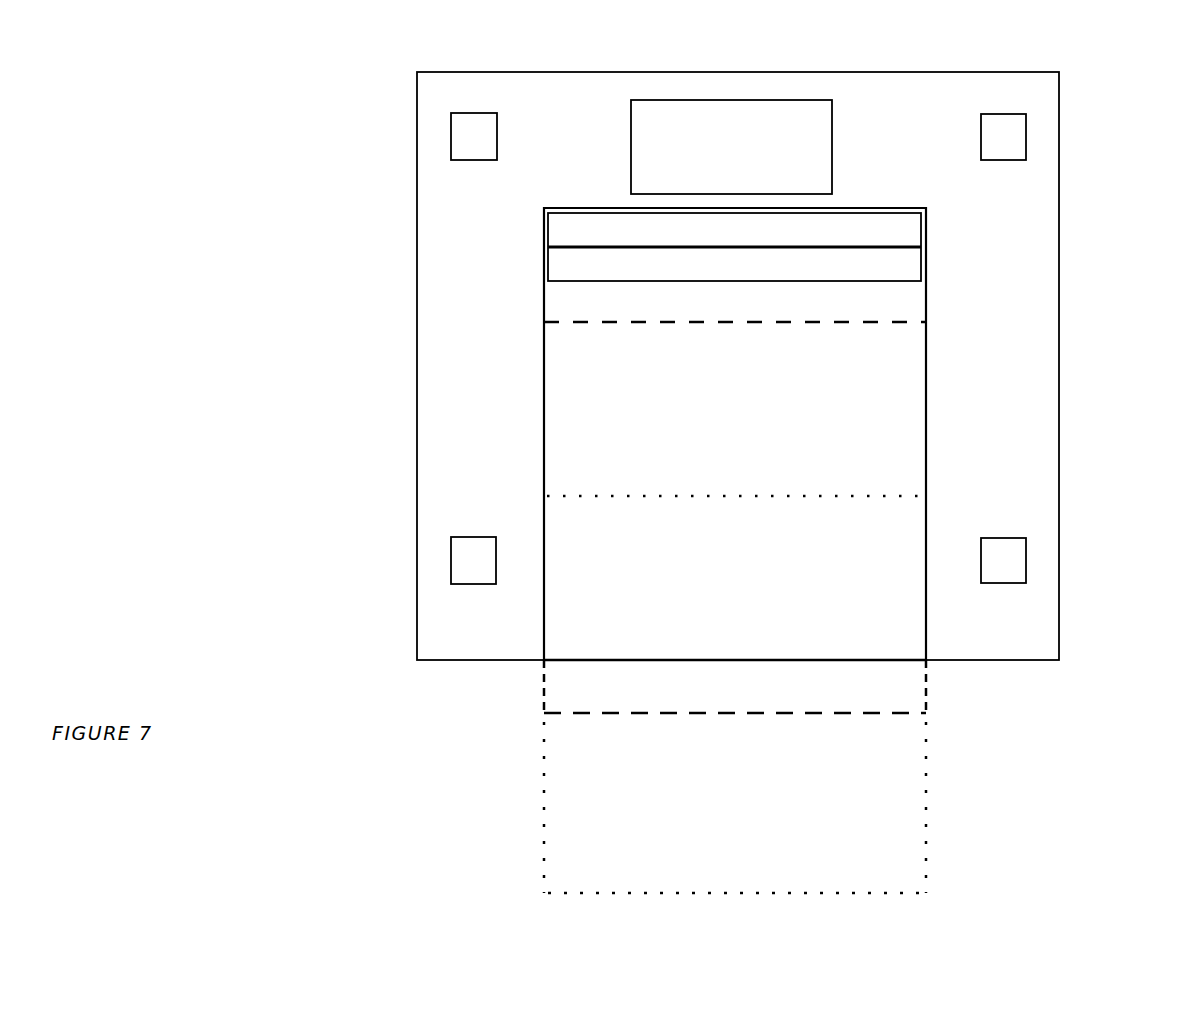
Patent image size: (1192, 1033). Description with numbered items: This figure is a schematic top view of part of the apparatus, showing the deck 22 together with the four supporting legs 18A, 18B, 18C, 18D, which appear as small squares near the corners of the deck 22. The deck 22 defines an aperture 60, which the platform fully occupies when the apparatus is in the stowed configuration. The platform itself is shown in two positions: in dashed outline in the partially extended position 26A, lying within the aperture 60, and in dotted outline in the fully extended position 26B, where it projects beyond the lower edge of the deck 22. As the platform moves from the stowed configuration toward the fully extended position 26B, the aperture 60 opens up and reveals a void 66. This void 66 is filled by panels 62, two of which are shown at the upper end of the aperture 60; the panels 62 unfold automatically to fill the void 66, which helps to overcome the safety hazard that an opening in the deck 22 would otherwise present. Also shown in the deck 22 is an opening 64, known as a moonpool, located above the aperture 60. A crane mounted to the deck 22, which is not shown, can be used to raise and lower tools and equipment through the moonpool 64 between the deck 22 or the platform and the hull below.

The deck 22 is at (430, 415).
The supporting leg 18A is at (1013, 566).
The supporting leg 18B is at (474, 568).
The supporting leg 18C is at (1010, 135).
The supporting leg 18D is at (460, 140).
The opening (moonpool) 64 is at (819, 124).
The aperture 60 is at (580, 302).
The panels 62 is at (905, 225).
The void 66 is at (910, 292).
The partially extended position of platform 26A is at (890, 390).
The fully extended position of platform 26B is at (930, 814).